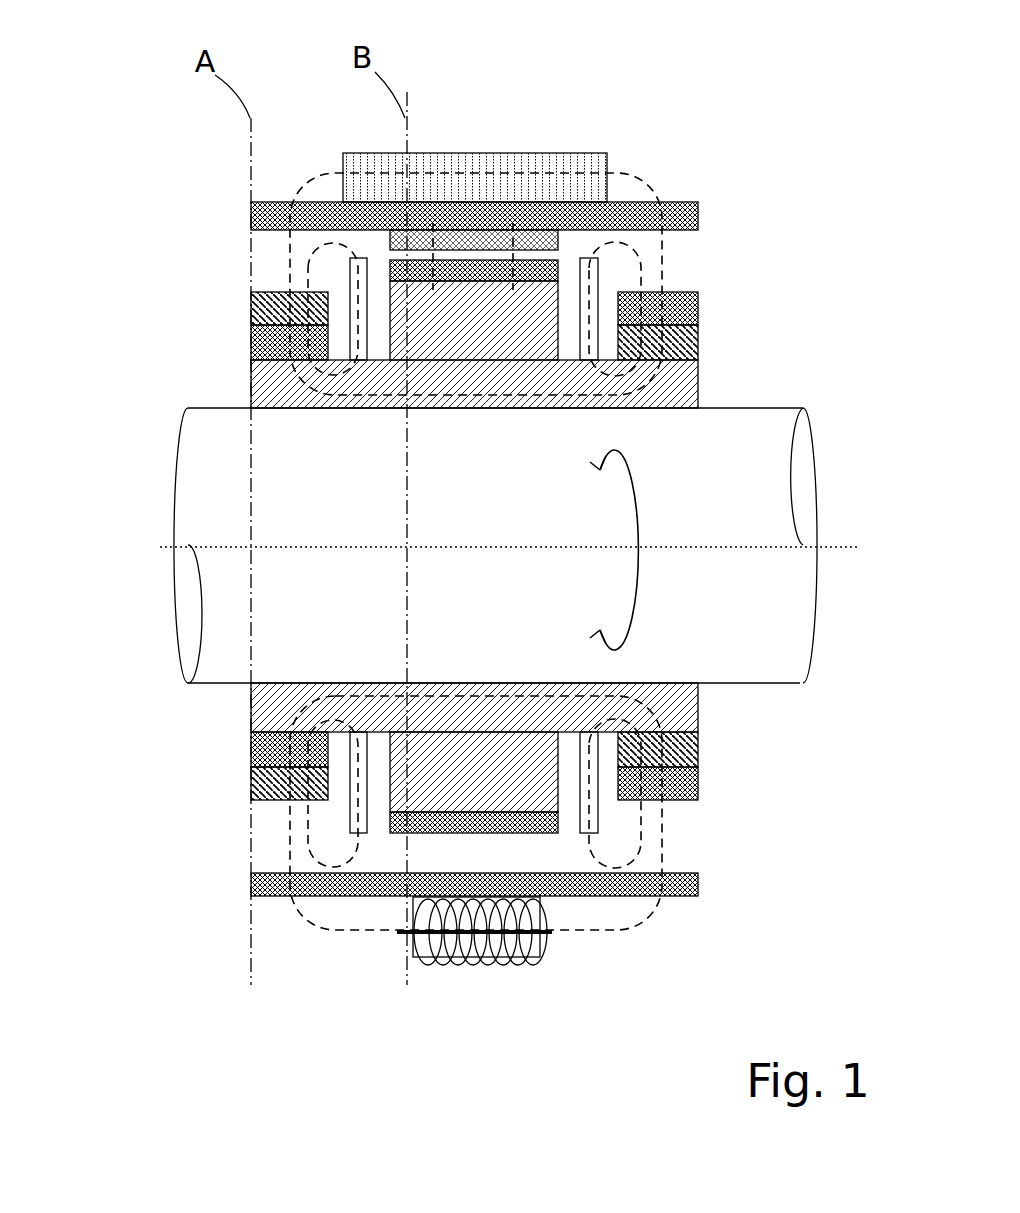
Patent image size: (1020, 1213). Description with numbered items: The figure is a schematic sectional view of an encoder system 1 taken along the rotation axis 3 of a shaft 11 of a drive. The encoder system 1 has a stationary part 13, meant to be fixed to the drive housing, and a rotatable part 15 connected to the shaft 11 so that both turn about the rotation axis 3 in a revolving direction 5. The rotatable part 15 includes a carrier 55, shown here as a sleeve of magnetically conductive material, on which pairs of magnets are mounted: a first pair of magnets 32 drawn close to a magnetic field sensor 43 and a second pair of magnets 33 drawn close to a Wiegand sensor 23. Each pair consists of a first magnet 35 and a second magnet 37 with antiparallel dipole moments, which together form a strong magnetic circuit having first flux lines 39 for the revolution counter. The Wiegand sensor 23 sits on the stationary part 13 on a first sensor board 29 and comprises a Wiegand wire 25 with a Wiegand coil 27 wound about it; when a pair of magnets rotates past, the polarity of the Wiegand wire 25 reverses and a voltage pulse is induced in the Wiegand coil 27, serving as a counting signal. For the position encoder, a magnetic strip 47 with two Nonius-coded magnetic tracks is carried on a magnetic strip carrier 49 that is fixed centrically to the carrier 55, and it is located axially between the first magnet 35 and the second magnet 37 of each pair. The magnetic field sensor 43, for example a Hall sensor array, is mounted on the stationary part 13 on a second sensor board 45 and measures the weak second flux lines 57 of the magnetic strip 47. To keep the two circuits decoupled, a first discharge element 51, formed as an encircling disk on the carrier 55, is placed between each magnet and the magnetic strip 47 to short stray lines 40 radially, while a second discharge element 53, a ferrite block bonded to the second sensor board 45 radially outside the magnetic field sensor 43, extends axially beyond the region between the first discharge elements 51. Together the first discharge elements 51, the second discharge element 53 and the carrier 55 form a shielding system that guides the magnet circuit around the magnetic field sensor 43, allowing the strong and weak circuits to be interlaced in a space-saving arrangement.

The encoder system 1 is at (162, 118).
The rotation axis 3 is at (827, 545).
The revolving direction 5 is at (643, 603).
The shaft 11 is at (803, 408).
The stationary part 13 is at (430, 557).
The rotatable part 15 is at (147, 402).
The Wiegand sensor 23 is at (460, 968).
The Wiegand wire 25 is at (542, 933).
The Wiegand coil 27 is at (500, 963).
The first sensor board 29 is at (677, 896).
The first pair of magnets 32 is at (251, 305).
The second pair of magnets 33 is at (251, 788).
The first magnet 35 is at (251, 333).
The second magnet 37 is at (698, 330).
The first flux lines 39 is at (297, 287).
The stray lines 40 is at (307, 283).
The magnetic field sensor 43 is at (613, 197).
The second sensor board 45 is at (687, 202).
The magnetic strip 47 is at (483, 273).
The magnetic strip carrier 49 is at (560, 290).
The first discharge element 51 is at (343, 258).
The second discharge element 53 is at (523, 153).
The carrier 55 is at (251, 390).
The second flux lines 57 is at (430, 243).